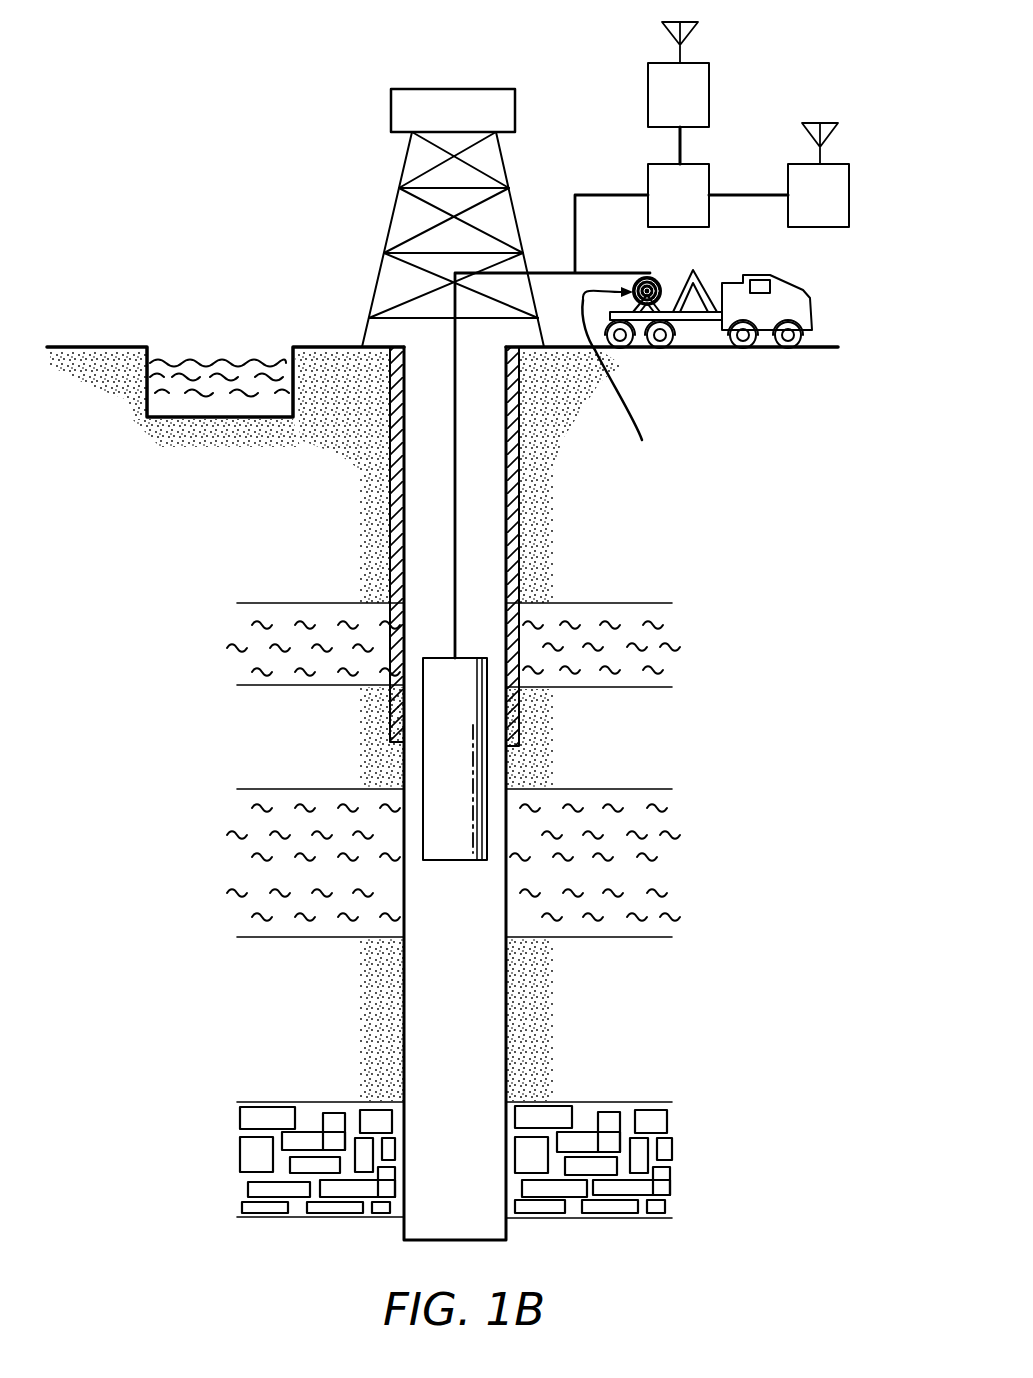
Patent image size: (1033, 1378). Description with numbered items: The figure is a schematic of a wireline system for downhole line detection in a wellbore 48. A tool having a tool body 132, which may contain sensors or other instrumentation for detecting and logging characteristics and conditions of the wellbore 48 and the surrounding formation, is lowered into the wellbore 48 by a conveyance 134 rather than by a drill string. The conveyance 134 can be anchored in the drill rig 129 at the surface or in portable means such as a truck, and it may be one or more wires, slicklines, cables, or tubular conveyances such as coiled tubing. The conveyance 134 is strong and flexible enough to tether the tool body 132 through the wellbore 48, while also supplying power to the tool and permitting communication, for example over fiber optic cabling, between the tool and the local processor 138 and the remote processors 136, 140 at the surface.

The wellbore 48 is at (500, 1013).
The drill rig 129 is at (515, 152).
The tool body 132 is at (438, 745).
The conveyance 134 is at (453, 282).
The remote processor 136 is at (648, 75).
The local processor 138 is at (709, 165).
The remote processor 140 is at (820, 227).